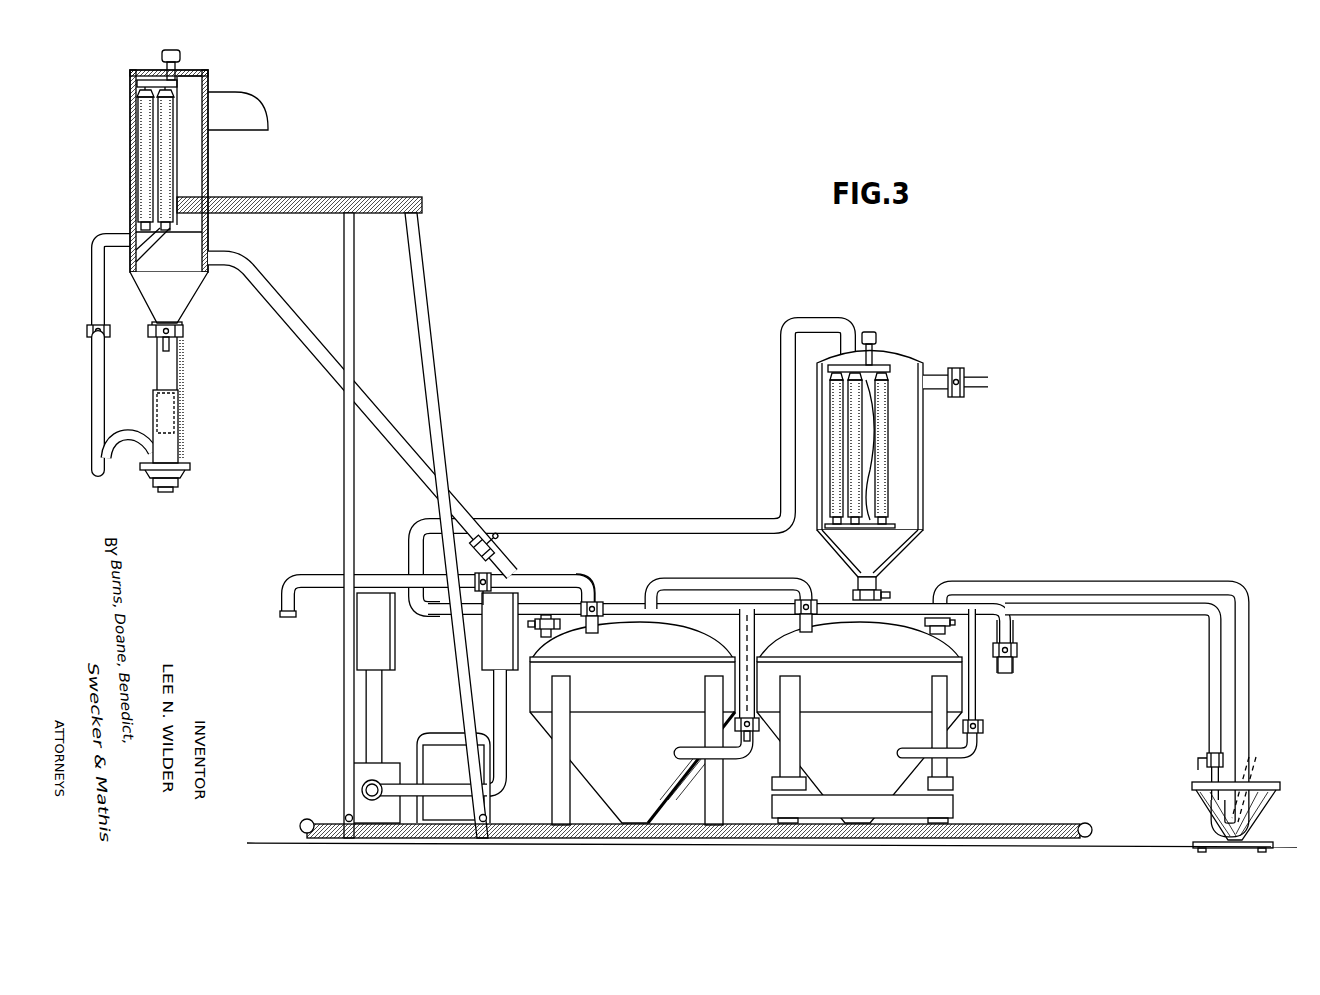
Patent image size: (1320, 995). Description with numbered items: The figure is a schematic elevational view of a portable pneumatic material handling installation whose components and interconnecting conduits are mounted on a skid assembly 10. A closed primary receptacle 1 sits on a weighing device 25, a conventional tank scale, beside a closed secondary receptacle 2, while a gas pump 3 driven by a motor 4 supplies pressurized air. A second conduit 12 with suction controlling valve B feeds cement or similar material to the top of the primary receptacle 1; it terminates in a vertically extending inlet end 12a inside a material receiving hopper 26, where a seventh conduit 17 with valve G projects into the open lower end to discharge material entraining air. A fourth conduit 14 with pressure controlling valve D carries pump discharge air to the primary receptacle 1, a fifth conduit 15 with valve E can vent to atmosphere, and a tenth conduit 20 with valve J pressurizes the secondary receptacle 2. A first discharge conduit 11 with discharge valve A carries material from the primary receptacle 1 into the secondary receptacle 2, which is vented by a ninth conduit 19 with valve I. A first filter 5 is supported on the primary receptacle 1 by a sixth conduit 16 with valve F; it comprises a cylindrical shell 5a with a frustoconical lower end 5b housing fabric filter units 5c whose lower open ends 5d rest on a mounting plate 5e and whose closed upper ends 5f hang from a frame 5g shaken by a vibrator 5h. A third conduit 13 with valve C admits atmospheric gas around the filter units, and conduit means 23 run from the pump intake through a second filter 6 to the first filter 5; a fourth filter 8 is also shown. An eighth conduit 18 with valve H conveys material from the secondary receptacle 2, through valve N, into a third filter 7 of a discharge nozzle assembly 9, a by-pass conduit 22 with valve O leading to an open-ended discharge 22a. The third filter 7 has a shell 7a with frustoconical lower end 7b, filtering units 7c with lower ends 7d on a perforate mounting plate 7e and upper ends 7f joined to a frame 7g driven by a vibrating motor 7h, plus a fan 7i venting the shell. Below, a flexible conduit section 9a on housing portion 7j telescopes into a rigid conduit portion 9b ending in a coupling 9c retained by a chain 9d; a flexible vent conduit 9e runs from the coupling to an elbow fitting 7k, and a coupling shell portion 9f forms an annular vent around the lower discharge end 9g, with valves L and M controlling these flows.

The primary receptacle 1 is at (859, 722).
The secondary receptacle 2 is at (632, 723).
The gas pump 3 is at (376, 726).
The motor 4 is at (440, 733).
The first filter 5 is at (870, 438).
The cylindrical shell 5a is at (922, 433).
The frustoconical lower end 5b is at (825, 555).
The fabric filter units 5c is at (860, 470).
The lower open end 5d is at (862, 505).
The mounting plate 5e is at (870, 526).
The closed upper ends 5f is at (870, 395).
The frame 5g is at (880, 368).
The vibrator 5h is at (868, 332).
The second filter 6 is at (376, 631).
The third filter 7 is at (208, 185).
The cylindrical shell 7a is at (212, 152).
The frustoconical lower end 7b is at (198, 290).
The fabric filtering units 7c is at (140, 178).
The lower filter unit ends 7d is at (150, 248).
The perforate mounting plate 7e is at (128, 235).
The upper filter unit ends 7f is at (137, 100).
The frame 7g is at (140, 80).
The vibrating motor 7h is at (180, 60).
The fan 7i is at (250, 112).
The cylindrical housing portion 7j is at (190, 326).
The elbow fitting 7k is at (92, 298).
The fourth filter 8 is at (500, 631).
The discharge nozzle assembly 9 is at (190, 236).
The flexible conduit section 9a is at (156, 375).
The rigid conduit portion 9b is at (170, 430).
The coupling 9c is at (190, 465).
The flexible chain 9d is at (183, 385).
The flexible vent conduit 9e is at (125, 468).
The coupling shell portion 9f is at (180, 483).
The lower discharge end 9g is at (170, 492).
The skid assembly 10 is at (820, 845).
The first discharge conduit 11 is at (688, 580).
The second conduit 12 is at (1078, 582).
The material inlet end 12a is at (1256, 788).
The third conduit 13 is at (945, 372).
The fourth conduit 14 is at (510, 725).
The fifth conduit 15 is at (1013, 630).
The sixth conduit 16 is at (880, 590).
The seventh conduit 17 is at (1165, 614).
The eighth conduit 18 is at (282, 298).
The ninth conduit 19 is at (590, 585).
The tenth conduit 20 is at (755, 640).
The by-pass conduit 22 is at (390, 575).
The open-ended discharge 22a is at (280, 612).
The conduit means 23 is at (650, 520).
The weighing device 25 is at (955, 805).
The material receiving hopper 26 is at (1250, 835).
The discharge valve A is at (813, 600).
The suction controlling valve B is at (937, 633).
The communication-to-atmosphere-controlling valve C is at (960, 368).
The pressure controlling valve D is at (985, 727).
The communication-to-atmosphere-controlling valve E is at (1018, 651).
The filter action controlling valve F is at (890, 595).
The seventh valve G is at (1205, 757).
The discharge flow regulating valve H is at (560, 630).
The vent controlling valve I is at (604, 615).
The tank pressure regulating valve J is at (765, 735).
The twelfth valve L is at (185, 334).
The thirteenth valve M is at (110, 333).
The fourteenth valve N is at (498, 556).
The fifteenth valve O is at (482, 598).